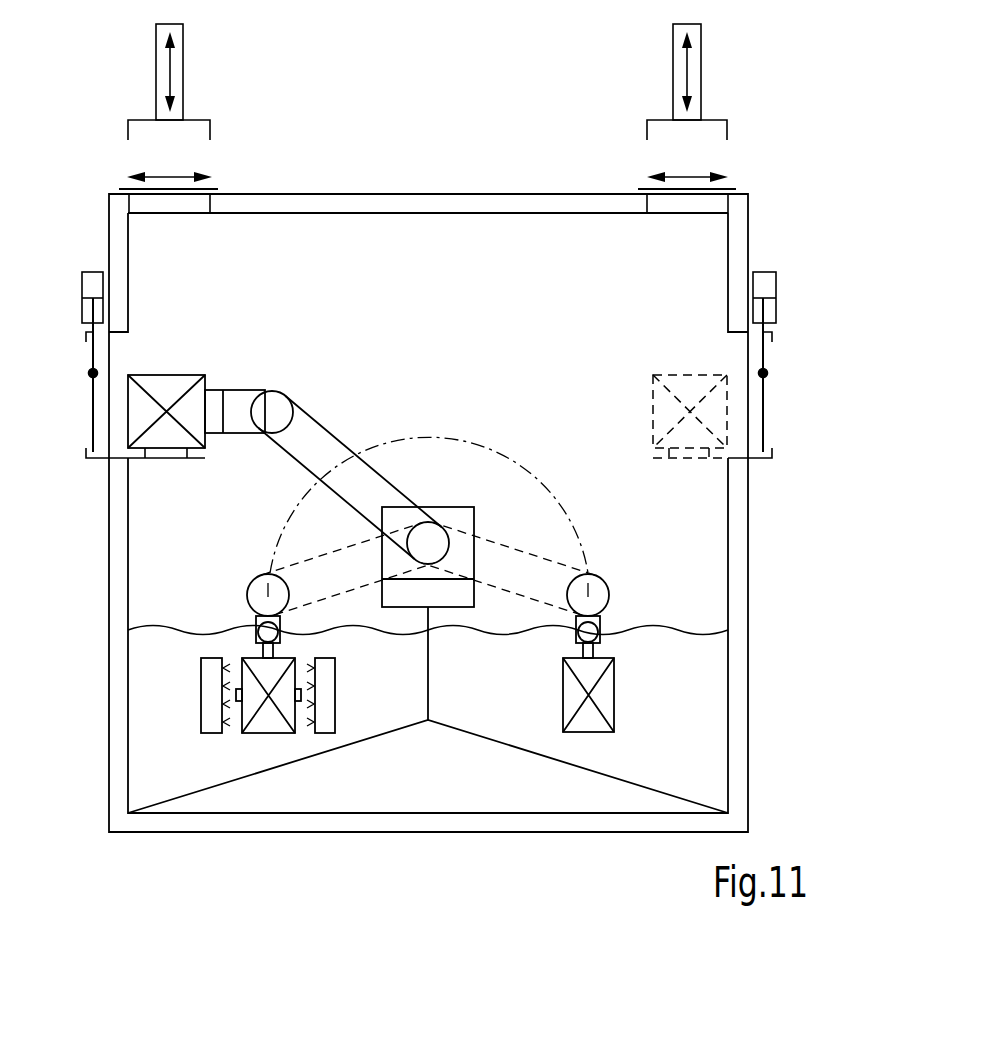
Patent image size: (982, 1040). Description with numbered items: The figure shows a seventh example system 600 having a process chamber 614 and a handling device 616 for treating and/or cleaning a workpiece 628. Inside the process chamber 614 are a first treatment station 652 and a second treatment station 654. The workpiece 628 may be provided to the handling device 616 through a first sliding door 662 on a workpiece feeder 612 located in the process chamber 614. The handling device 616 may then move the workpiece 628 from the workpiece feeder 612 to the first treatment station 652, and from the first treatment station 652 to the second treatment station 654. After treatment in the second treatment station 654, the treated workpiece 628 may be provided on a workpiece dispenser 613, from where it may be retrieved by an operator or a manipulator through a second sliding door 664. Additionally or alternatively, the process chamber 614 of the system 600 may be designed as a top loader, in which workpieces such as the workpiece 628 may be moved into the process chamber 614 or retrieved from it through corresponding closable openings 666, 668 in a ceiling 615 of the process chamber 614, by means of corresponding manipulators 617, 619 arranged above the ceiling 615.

The system 600 is at (800, 74).
The workpiece feeder 612 is at (167, 458).
The workpiece dispenser 613 is at (690, 458).
The process chamber 614 is at (121, 600).
The ceiling 615 is at (420, 205).
The handling device 616 is at (349, 435).
The manipulator 617 is at (183, 64).
The manipulator 619 is at (701, 64).
The workpiece 628 is at (165, 375).
The first treatment station 652 is at (155, 720).
The second treatment station 654 is at (700, 722).
The first sliding door 662 is at (85, 422).
The second sliding door 664 is at (765, 417).
The closable opening 666 is at (172, 206).
The closable opening 668 is at (684, 207).